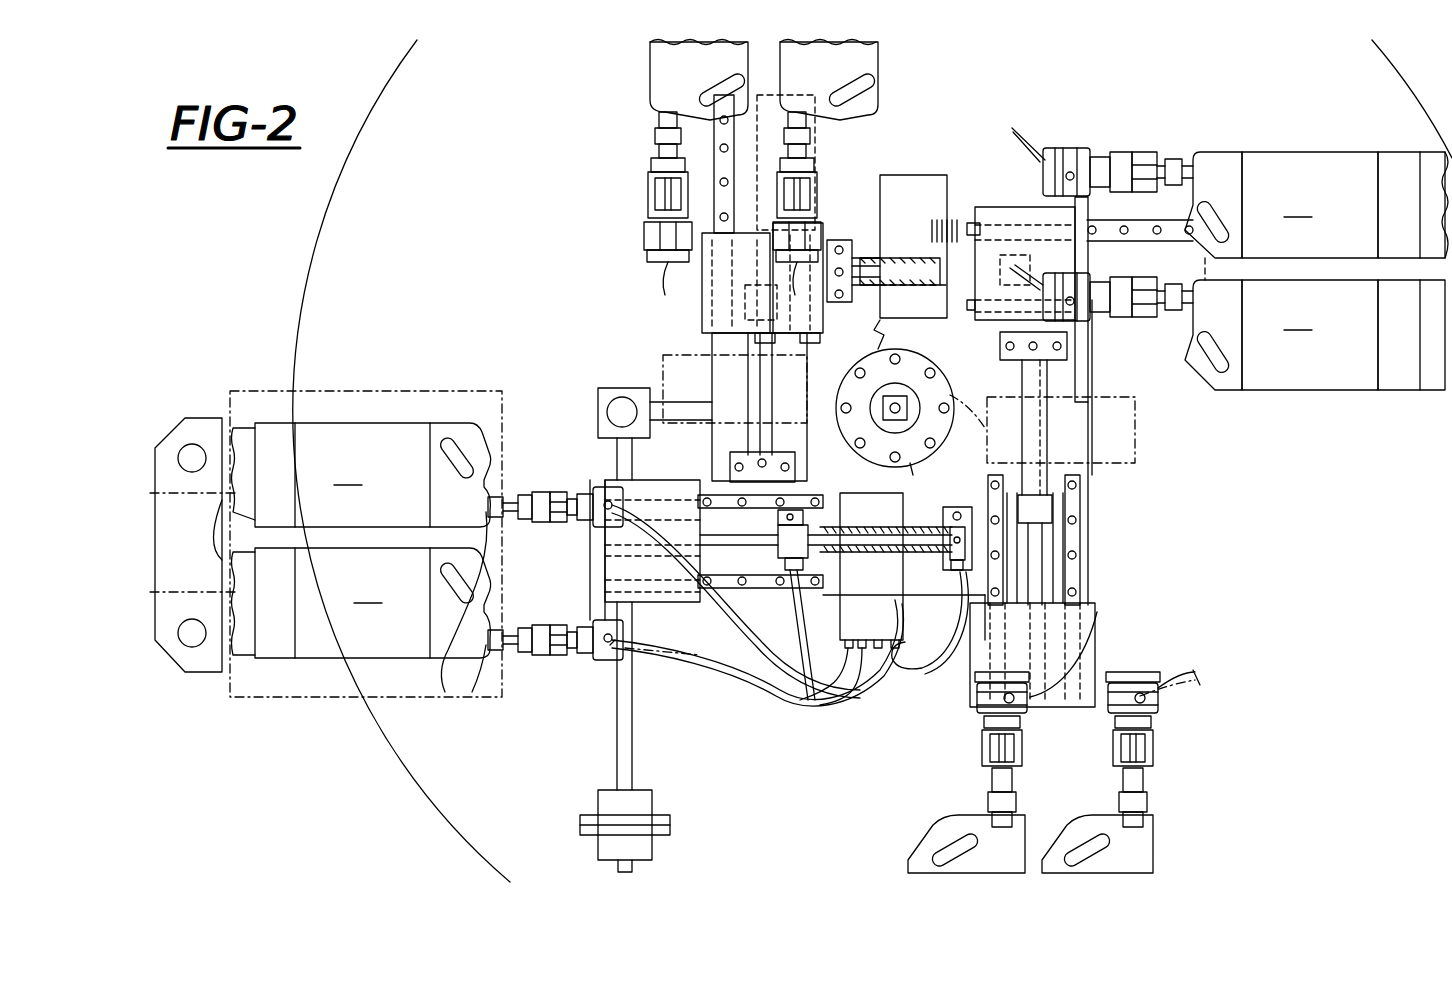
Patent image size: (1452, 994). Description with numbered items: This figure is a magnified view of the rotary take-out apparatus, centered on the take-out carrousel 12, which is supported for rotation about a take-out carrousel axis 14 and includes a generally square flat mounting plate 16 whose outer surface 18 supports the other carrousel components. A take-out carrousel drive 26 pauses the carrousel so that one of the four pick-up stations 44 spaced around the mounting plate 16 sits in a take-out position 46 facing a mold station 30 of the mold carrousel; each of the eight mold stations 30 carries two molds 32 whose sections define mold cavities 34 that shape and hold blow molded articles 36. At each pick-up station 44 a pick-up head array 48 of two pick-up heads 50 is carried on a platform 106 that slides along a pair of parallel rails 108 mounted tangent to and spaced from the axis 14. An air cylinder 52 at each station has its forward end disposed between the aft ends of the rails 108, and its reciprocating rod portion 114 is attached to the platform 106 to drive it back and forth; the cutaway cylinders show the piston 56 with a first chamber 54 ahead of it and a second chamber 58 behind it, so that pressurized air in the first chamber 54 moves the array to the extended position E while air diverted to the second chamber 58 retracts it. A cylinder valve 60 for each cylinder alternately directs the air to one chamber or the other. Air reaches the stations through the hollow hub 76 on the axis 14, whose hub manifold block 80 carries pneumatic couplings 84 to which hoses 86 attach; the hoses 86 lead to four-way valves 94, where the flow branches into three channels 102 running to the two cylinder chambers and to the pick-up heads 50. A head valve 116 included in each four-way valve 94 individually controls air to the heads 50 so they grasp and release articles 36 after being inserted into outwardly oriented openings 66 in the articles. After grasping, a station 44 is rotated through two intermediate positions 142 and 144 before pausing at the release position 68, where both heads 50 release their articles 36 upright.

The take-out carrousel 12 is at (1078, 170).
The take-out carrousel axis 14 is at (895, 400).
The mounting plate 16 is at (1100, 550).
The outer surface 18 is at (1085, 382).
The take-out carrousel drive 26 is at (652, 808).
The mold station 30 is at (357, 391).
The mold 32 is at (222, 455).
The mold cavity 34 is at (262, 512).
The blow molded article 36 is at (851, 405).
The pick-up station 44 is at (1060, 165).
The take-out position 46 is at (518, 655).
The pick-up head array 48 is at (745, 230).
The pick-up head 50 is at (590, 490).
The air cylinder 52 is at (822, 258).
The first chamber 54 is at (845, 255).
The piston 56 is at (872, 268).
The second chamber 58 is at (910, 265).
The cylinder valve 60 is at (925, 200).
The opening 66 is at (462, 690).
The release position 68 is at (1163, 664).
The hub 76 is at (822, 410).
The hub manifold block 80 is at (838, 372).
The pneumatic coupling 84 is at (605, 495).
The pneumatic hose 86 is at (930, 333).
The four-way valve 94 is at (890, 190).
The channel 102 is at (1045, 160).
The platform 106 is at (640, 480).
The rails 108 is at (692, 612).
The reciprocating rod portion 114 is at (700, 540).
The head valve 116 is at (950, 180).
The intermediate position 142 is at (625, 82).
The intermediate position 144 is at (1208, 140).
The extended position E is at (650, 665).